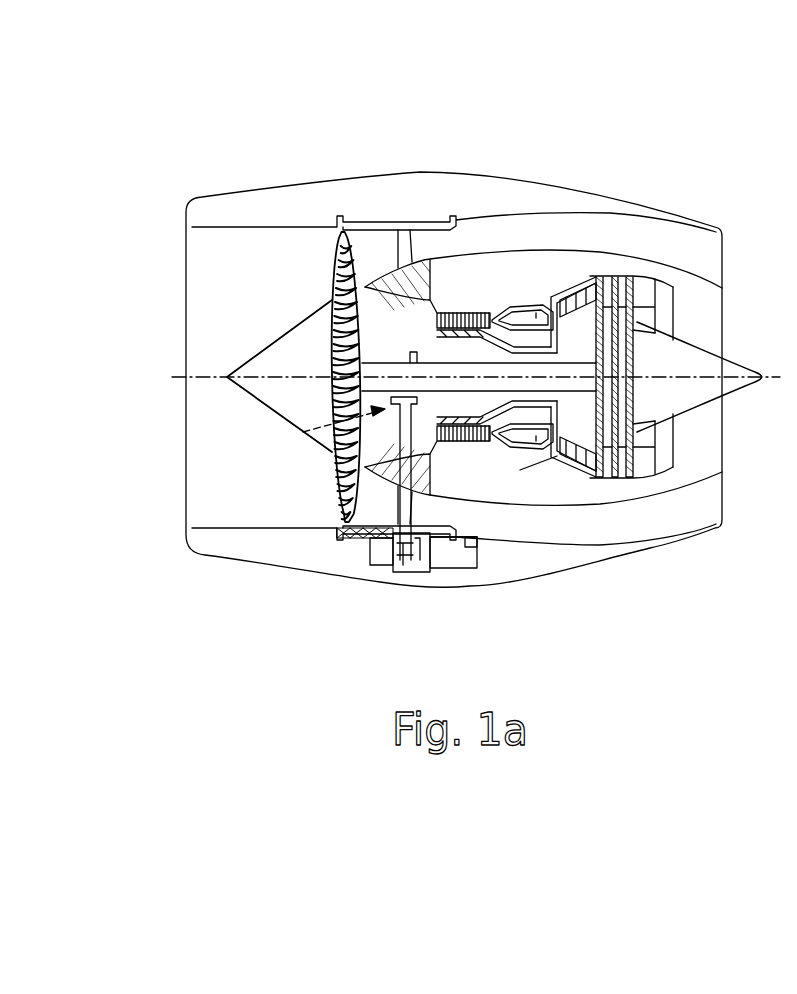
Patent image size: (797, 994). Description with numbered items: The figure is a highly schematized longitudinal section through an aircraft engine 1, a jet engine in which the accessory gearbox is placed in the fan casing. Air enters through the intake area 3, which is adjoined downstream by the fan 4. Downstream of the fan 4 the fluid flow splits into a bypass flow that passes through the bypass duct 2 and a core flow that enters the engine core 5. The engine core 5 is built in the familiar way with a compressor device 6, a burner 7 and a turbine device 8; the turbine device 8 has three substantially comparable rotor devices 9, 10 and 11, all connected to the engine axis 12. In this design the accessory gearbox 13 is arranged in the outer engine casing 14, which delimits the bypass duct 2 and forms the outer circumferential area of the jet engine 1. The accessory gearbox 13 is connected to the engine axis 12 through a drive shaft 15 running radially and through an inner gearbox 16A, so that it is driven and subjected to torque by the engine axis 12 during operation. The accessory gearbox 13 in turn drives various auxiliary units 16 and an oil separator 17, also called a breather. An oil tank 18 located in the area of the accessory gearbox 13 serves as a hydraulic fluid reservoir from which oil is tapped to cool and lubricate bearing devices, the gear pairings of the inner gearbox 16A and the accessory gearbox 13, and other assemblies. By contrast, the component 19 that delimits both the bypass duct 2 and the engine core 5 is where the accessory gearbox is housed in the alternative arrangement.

The aircraft engine 1 is at (243, 155).
The bypass duct 2 is at (485, 237).
The intake area 3 is at (198, 255).
The fan 4 is at (327, 227).
The engine core 5 is at (333, 458).
The compressor device 6 is at (455, 298).
The burner 7 is at (531, 312).
The turbine device 8 is at (607, 262).
The rotor device 9 is at (615, 272).
The rotor device 10 is at (618, 280).
The rotor device 11 is at (640, 288).
The engine axis 12 is at (563, 395).
The accessory gearbox 13 is at (423, 585).
The outer engine casing 14 is at (322, 578).
The drive shaft 15 is at (385, 566).
The auxiliary units 16 is at (469, 584).
The oil separator 17 is at (477, 543).
The oil tank 18 is at (417, 572).
The component 19 is at (330, 537).
The inner gearbox 16A is at (303, 432).